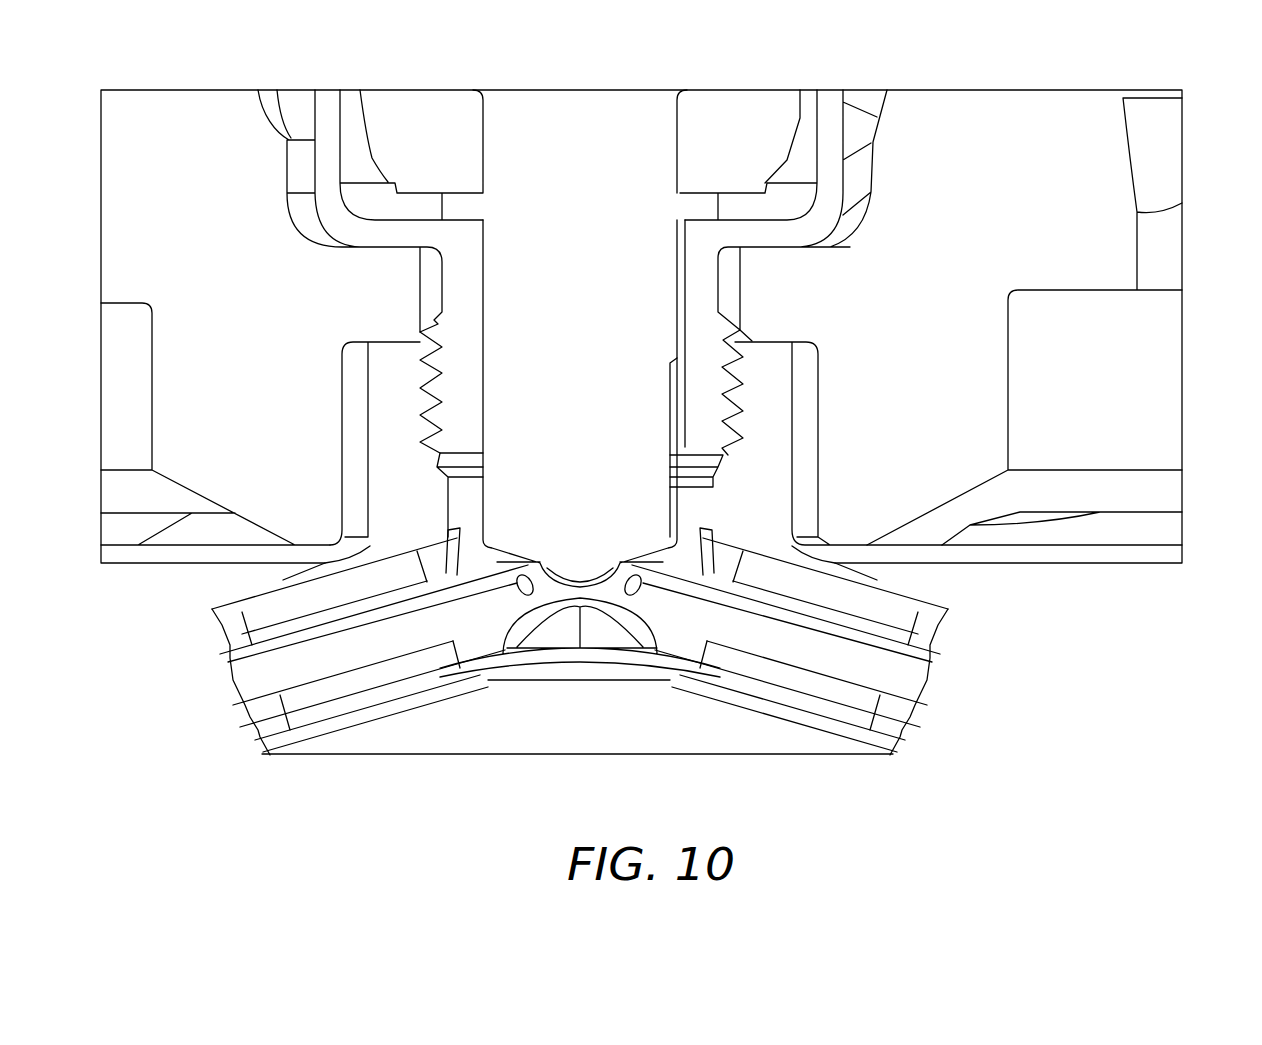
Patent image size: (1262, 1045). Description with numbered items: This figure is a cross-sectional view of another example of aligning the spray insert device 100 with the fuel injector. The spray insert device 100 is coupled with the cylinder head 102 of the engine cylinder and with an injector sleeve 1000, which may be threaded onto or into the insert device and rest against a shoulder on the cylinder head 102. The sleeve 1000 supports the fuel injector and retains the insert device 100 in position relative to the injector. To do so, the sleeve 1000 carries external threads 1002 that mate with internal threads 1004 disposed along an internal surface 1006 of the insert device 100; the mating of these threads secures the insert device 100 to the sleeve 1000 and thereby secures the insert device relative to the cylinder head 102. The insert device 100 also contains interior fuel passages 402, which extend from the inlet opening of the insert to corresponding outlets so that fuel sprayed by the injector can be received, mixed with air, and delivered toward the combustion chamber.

The injector sleeve 1000 is at (757, 237).
The external threads 1002 is at (750, 376).
The internal threads 1004 is at (712, 367).
The internal surface 1006 is at (722, 455).
The spray insert device 100 is at (747, 508).
The cylinder head 102 is at (1152, 315).
The interior fuel passages 402 is at (526, 590).